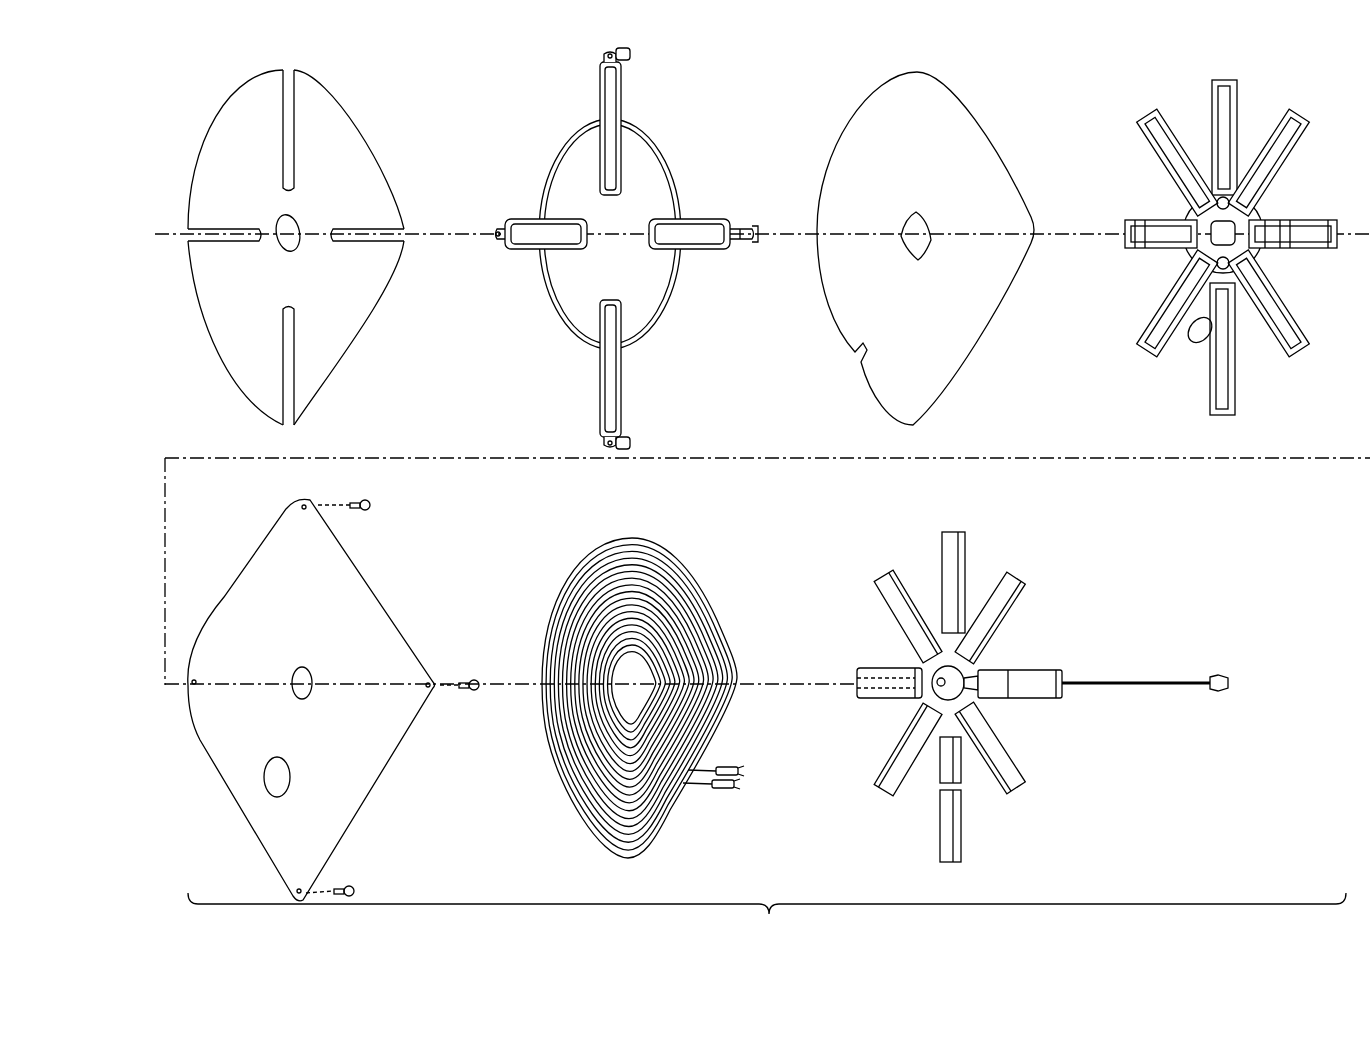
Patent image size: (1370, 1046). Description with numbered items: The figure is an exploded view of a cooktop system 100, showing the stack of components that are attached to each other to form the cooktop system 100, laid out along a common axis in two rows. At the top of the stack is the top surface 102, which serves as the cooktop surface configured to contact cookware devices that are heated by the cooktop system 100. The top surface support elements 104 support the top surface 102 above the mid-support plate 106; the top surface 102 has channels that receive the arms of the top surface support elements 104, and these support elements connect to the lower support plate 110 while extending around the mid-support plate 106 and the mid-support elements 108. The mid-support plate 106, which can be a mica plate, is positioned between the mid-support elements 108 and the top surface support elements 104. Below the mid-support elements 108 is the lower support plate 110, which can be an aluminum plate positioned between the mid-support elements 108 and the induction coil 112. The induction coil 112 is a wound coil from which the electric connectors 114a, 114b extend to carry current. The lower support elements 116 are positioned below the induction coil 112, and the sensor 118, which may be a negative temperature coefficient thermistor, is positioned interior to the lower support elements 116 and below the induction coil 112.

The cooktop system 100 is at (203, 80).
The top surface 102 is at (243, 147).
The top surface support elements 104 is at (624, 439).
The mid-support plate 106 is at (863, 122).
The mid-support elements 108 is at (1208, 405).
The lower support plate 110 is at (268, 557).
The induction coil 112 is at (630, 540).
The electric connector 114a is at (712, 768).
The electric connector 114b is at (702, 793).
The lower support elements 116 is at (1063, 527).
The sensor 118 is at (968, 682).